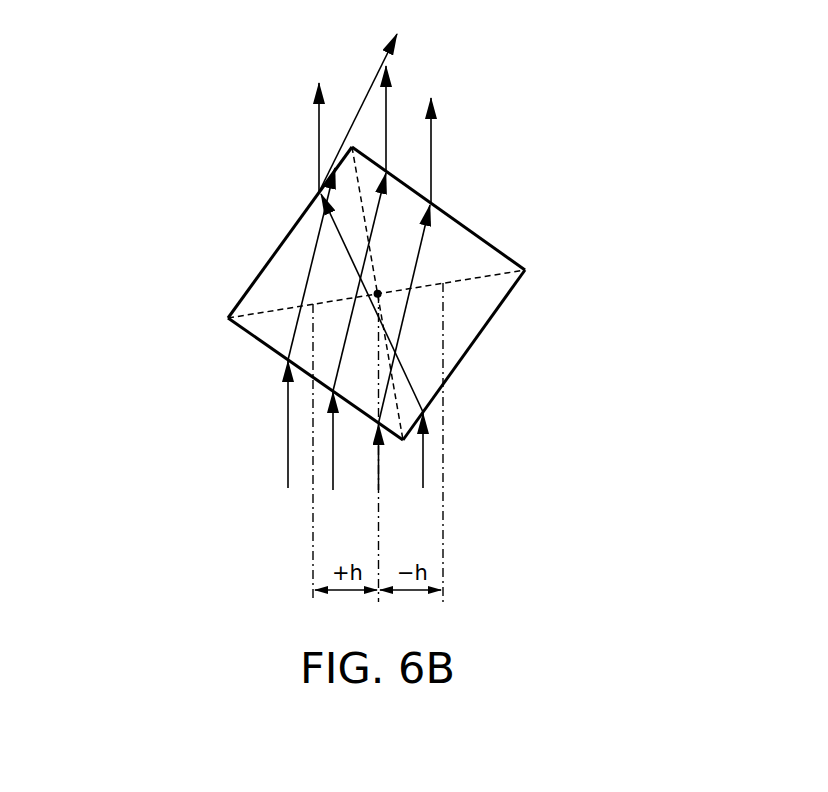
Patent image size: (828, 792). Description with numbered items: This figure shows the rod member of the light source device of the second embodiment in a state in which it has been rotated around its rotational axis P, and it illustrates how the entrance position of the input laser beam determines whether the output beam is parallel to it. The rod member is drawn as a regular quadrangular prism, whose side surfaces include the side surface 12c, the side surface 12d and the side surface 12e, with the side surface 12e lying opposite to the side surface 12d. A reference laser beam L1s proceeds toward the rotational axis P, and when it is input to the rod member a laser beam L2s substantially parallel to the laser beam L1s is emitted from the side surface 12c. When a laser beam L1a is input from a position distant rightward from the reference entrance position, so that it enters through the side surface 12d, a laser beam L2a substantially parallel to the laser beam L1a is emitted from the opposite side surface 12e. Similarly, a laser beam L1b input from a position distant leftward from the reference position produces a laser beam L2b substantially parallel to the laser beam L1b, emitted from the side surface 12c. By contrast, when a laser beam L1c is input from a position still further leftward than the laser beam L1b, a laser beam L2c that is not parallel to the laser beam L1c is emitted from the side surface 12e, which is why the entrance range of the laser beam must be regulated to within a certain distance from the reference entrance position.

The side surface 12c is at (488, 243).
The side surface 12d is at (508, 295).
The side surface 12e is at (251, 283).
The rotational axis P is at (378, 290).
The laser beam L1a is at (423, 467).
The laser beam L1b is at (333, 480).
The laser beam L1c is at (288, 417).
The reference laser beam L1s is at (379, 478).
The laser beam L2a is at (319, 127).
The laser beam L2b is at (388, 84).
The laser beam L2c is at (367, 93).
The laser beam L2s is at (432, 141).